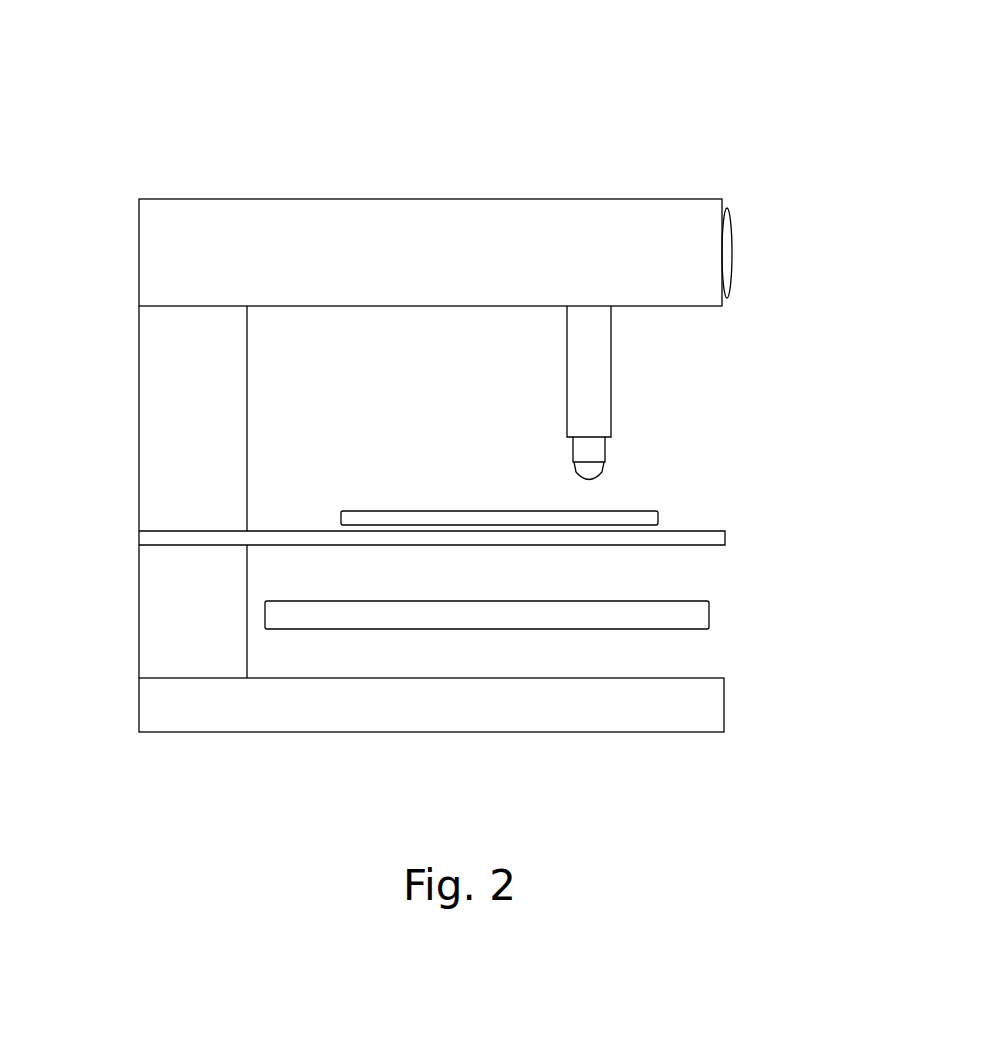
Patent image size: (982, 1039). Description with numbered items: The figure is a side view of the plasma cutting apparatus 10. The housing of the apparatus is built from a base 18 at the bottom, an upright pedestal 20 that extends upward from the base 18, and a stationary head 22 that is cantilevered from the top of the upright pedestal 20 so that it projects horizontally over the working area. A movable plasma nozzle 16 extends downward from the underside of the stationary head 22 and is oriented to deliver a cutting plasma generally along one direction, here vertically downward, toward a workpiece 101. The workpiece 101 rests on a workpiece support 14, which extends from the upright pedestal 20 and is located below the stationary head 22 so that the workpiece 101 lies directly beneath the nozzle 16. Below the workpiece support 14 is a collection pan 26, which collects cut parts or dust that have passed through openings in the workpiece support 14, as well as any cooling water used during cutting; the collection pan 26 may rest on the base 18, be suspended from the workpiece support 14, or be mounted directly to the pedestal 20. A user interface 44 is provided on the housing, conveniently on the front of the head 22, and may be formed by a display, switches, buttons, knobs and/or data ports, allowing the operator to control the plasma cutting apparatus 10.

The plasma cutting apparatus 10 is at (588, 86).
The stationary head 22 is at (404, 220).
The user interface 44 is at (742, 262).
The upright pedestal 20 is at (170, 408).
The movable plasma nozzle 16 is at (600, 410).
The workpiece 101 is at (650, 510).
The workpiece support 14 is at (725, 538).
The collection pan 26 is at (710, 615).
The base 18 is at (405, 712).